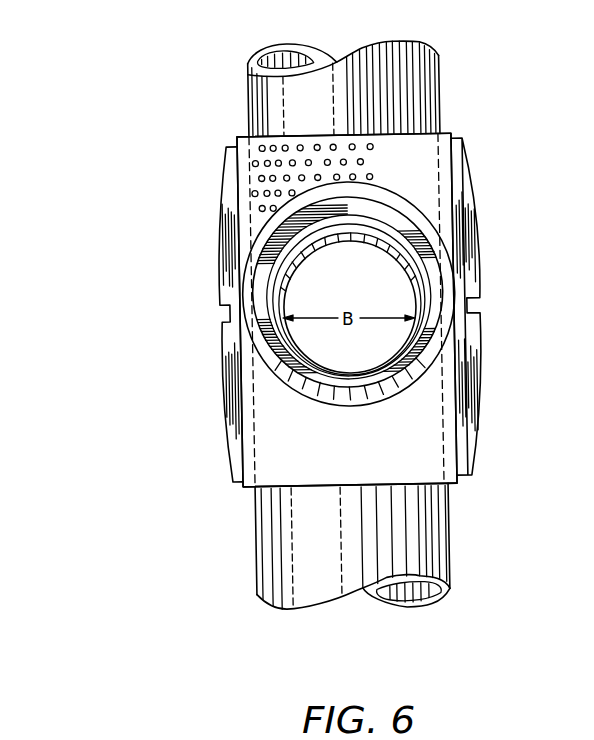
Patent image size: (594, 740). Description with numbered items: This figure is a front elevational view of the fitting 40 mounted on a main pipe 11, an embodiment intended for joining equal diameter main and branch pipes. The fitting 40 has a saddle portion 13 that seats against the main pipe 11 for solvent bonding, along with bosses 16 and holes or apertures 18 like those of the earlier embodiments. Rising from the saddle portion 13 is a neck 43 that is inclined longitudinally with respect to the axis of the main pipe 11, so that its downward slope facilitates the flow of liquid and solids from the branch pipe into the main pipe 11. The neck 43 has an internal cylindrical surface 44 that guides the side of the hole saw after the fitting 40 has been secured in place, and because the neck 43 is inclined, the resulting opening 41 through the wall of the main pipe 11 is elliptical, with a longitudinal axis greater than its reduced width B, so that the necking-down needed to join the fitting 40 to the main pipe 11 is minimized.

The main pipe 11 is at (420, 73).
The saddle portion 13 is at (443, 190).
The bosses 16 is at (232, 258).
The holes or apertures 18 is at (330, 140).
The fitting 40 is at (496, 372).
The opening 41 is at (404, 297).
The neck 43 is at (343, 403).
The internal cylindrical surface 44 is at (382, 233).